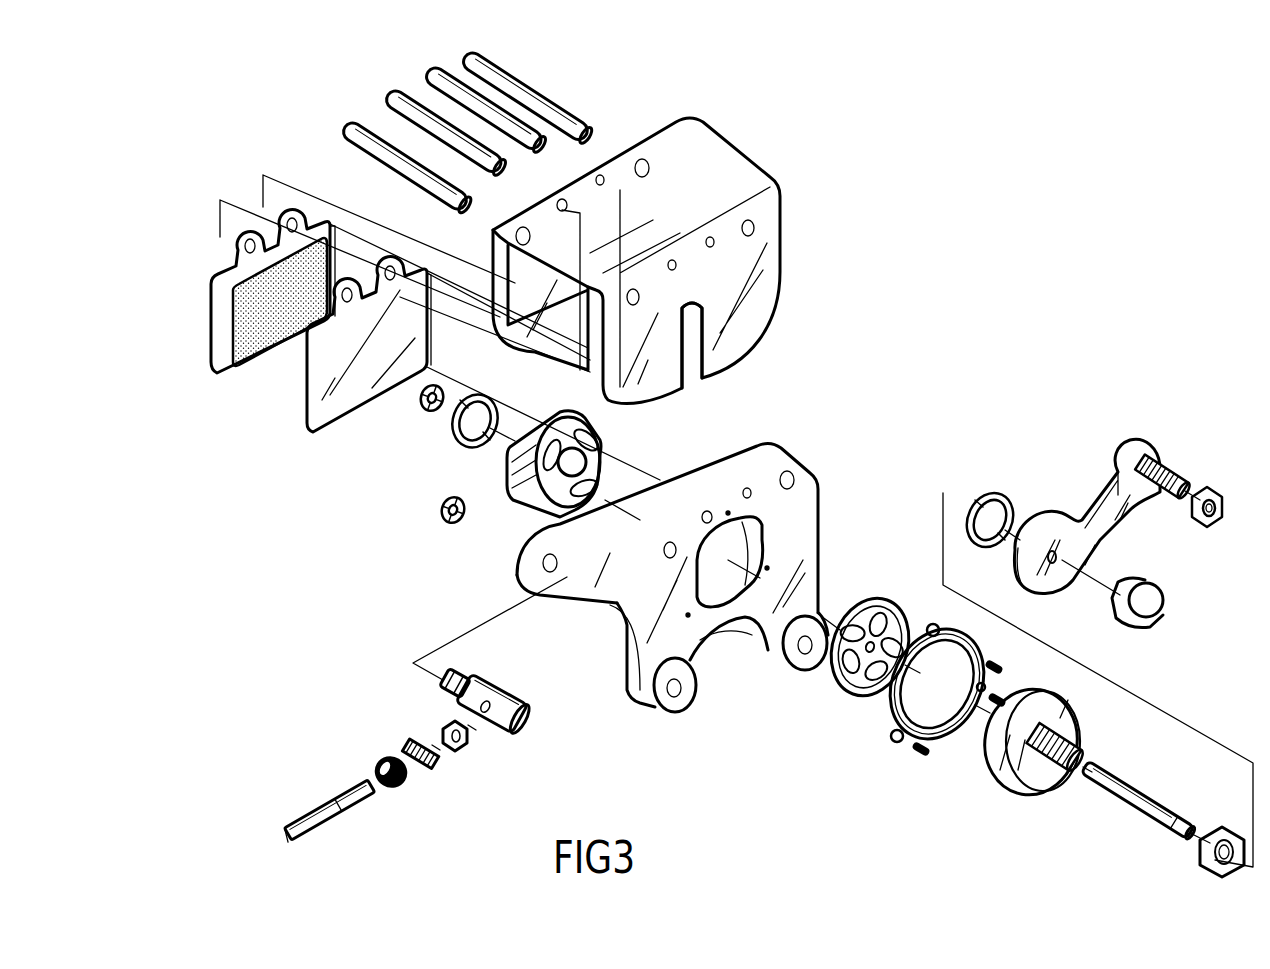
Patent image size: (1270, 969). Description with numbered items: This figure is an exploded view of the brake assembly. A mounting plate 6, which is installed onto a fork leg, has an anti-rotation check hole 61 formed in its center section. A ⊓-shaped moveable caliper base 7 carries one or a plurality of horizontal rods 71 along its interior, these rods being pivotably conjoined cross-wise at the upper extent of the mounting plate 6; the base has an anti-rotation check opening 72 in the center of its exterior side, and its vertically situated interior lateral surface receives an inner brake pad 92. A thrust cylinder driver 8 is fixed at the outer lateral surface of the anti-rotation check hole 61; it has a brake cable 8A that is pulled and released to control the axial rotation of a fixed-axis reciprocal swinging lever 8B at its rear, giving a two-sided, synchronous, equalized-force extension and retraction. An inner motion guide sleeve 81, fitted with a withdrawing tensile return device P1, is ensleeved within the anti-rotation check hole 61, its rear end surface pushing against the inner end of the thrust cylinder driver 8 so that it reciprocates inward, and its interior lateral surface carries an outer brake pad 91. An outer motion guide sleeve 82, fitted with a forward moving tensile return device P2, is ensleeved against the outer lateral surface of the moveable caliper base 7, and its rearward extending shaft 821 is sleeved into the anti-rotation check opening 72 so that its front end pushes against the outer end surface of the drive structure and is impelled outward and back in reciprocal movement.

The mounting plate 6 is at (790, 510).
The anti-rotation check hole 61 is at (753, 547).
The ⊓-shaped moveable caliper base 7 is at (720, 178).
The horizontal rods 71 is at (553, 118).
The anti-rotation check opening 72 is at (698, 330).
The thrust cylinder driver 8 is at (877, 693).
The brake cable 8A is at (410, 740).
The reciprocal swinging lever 8B is at (1077, 497).
The inner motion guide sleeve 81 is at (520, 480).
The outer motion guide sleeve 82 is at (993, 770).
The rearward extending shaft 821 is at (1043, 778).
The outer brake pad 91 is at (307, 420).
The inner brake pad 92 is at (210, 373).
The withdrawing tensile return device P1 is at (453, 432).
The forward moving tensile return device P2 is at (1005, 490).